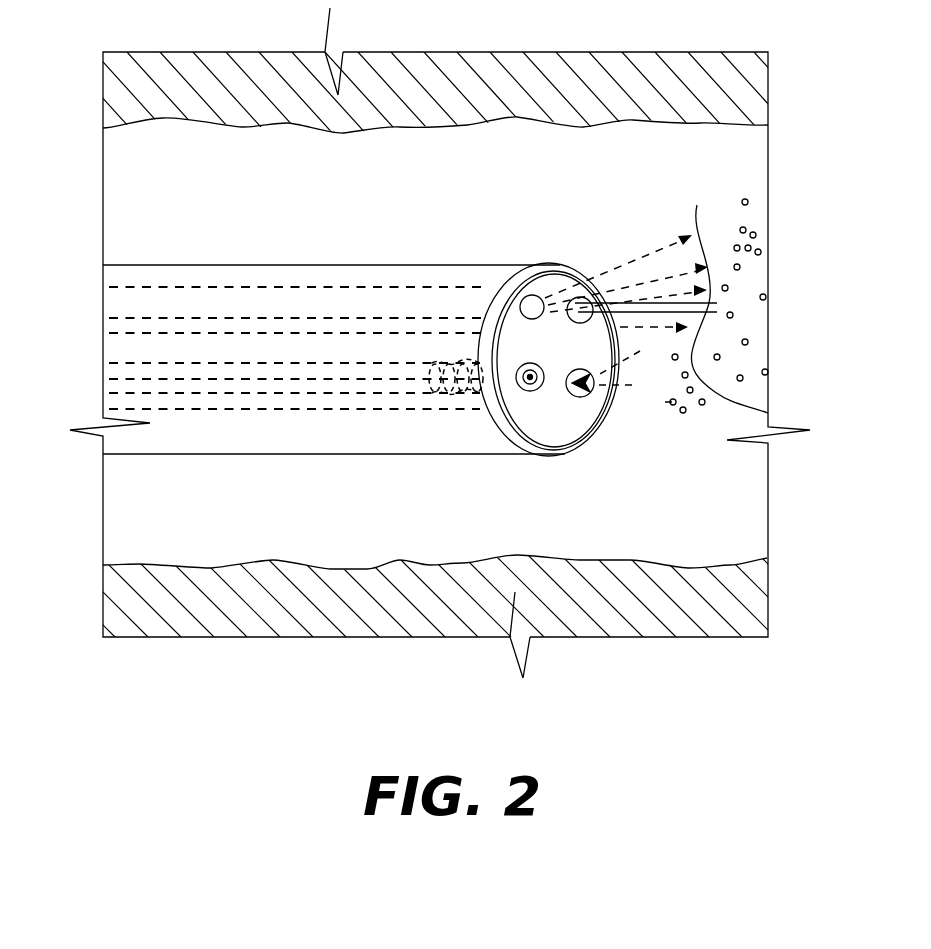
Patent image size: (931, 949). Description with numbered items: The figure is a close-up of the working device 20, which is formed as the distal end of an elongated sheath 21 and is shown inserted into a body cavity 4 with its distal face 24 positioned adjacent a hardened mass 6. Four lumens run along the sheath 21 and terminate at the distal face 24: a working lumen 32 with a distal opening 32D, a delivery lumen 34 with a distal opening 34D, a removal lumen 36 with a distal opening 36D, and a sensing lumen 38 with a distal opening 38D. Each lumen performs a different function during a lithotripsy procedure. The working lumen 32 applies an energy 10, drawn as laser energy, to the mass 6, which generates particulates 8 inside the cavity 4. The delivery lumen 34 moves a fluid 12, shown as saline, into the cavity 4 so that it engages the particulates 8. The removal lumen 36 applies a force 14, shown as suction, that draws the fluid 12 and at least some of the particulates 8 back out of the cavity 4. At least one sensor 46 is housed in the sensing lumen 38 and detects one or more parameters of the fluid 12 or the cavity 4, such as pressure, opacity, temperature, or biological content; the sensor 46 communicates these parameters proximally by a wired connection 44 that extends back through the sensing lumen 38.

The body cavity 4 is at (745, 473).
The hardened mass 6 is at (752, 338).
The particulates 8 is at (718, 300).
The energy 10 is at (729, 296).
The fluid 12 is at (655, 250).
The force 14 is at (647, 383).
The working device 20 is at (150, 198).
The elongated sheath 21 is at (395, 432).
The distal face 24 is at (567, 430).
The working lumen 32 is at (285, 322).
The distal opening of working lumen 32D is at (578, 297).
The delivery lumen 34 is at (357, 293).
The distal opening of delivery lumen 34D is at (518, 308).
The removal lumen 36 is at (310, 396).
The distal opening of removal lumen 36D is at (601, 432).
The sensing lumen 38 is at (195, 382).
The distal opening of sensing lumen 38D is at (530, 391).
The wired connection 44 is at (127, 380).
The sensor 46 is at (520, 377).